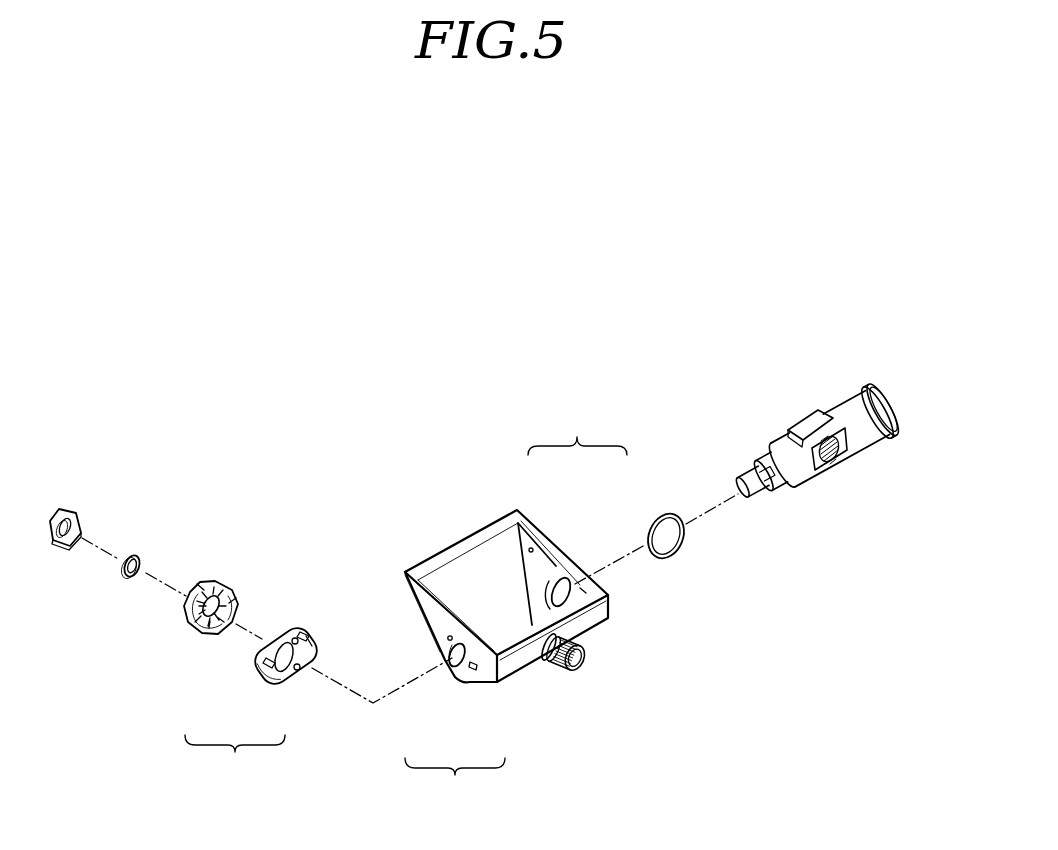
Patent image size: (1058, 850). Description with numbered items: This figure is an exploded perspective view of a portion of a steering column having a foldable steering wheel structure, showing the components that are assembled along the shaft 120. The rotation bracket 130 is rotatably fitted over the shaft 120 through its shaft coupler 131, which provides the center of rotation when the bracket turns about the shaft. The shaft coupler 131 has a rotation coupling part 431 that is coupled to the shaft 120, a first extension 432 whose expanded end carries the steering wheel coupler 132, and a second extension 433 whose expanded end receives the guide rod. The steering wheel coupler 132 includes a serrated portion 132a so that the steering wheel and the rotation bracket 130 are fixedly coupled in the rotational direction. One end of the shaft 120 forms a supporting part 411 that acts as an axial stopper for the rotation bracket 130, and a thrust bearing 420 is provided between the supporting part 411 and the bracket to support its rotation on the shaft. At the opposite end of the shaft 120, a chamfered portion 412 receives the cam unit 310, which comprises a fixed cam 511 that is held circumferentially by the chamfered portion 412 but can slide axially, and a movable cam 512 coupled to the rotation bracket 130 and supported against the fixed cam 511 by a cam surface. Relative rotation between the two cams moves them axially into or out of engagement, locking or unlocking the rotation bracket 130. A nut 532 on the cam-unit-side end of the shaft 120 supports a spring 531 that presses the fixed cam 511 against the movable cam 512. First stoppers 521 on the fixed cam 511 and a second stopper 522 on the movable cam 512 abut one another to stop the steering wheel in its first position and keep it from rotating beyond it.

The shaft 120 is at (838, 397).
The rotation bracket 130 is at (398, 558).
The shaft coupler 131 is at (516, 609).
The steering wheel coupler 132 is at (520, 663).
The serrated portion 132a is at (581, 668).
The cam unit 310 is at (235, 758).
The supporting part 411 is at (892, 395).
The chamfered portion 412 is at (763, 457).
The thrust bearing 420 is at (664, 513).
The rotation coupling part 431 is at (473, 543).
The first extension 432 is at (583, 587).
The second extension 433 is at (531, 547).
The fixed cam 511 is at (188, 623).
The movable cam 512 is at (287, 683).
The first stopper 521 is at (237, 598).
The second stopper 522 is at (310, 645).
The spring 531 is at (126, 556).
The nut 532 is at (68, 529).